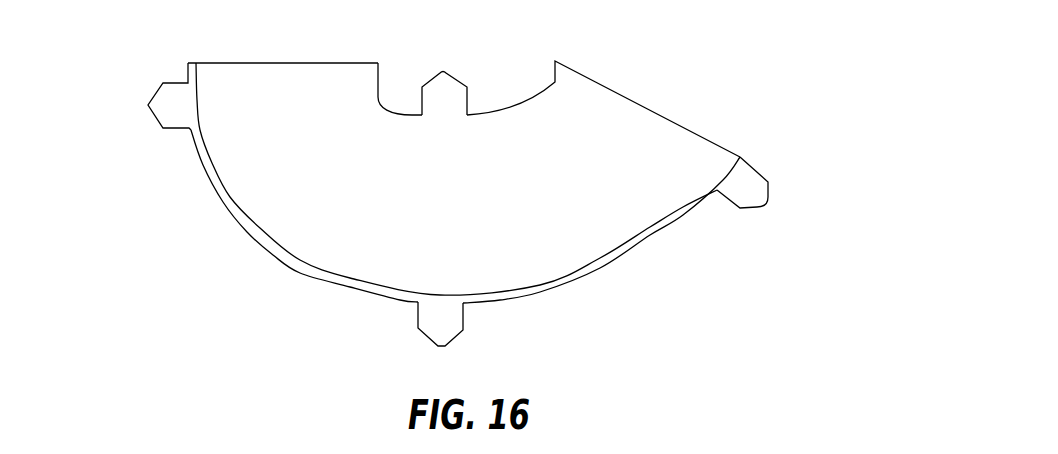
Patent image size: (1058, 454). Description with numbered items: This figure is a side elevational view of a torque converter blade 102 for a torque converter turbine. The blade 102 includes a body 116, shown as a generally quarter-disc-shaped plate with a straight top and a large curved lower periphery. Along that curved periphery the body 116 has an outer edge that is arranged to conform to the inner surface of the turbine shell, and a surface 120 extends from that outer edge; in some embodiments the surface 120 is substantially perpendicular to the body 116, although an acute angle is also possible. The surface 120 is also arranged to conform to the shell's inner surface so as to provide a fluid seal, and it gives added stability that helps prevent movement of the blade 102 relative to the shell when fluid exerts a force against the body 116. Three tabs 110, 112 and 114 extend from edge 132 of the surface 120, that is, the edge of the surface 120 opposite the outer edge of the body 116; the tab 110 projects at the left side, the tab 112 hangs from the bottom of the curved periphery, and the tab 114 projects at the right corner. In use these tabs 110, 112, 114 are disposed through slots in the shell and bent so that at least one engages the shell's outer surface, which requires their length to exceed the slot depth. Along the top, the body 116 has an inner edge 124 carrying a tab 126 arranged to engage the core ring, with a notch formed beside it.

The blade 102 is at (448, 191).
The tab 110 is at (162, 105).
The tab 112 is at (430, 330).
The tab 114 is at (752, 193).
The body 116 is at (257, 98).
The surface 120 is at (578, 267).
The inner edge 124 is at (387, 98).
The tab 126 is at (447, 97).
The edge 132 is at (293, 262).